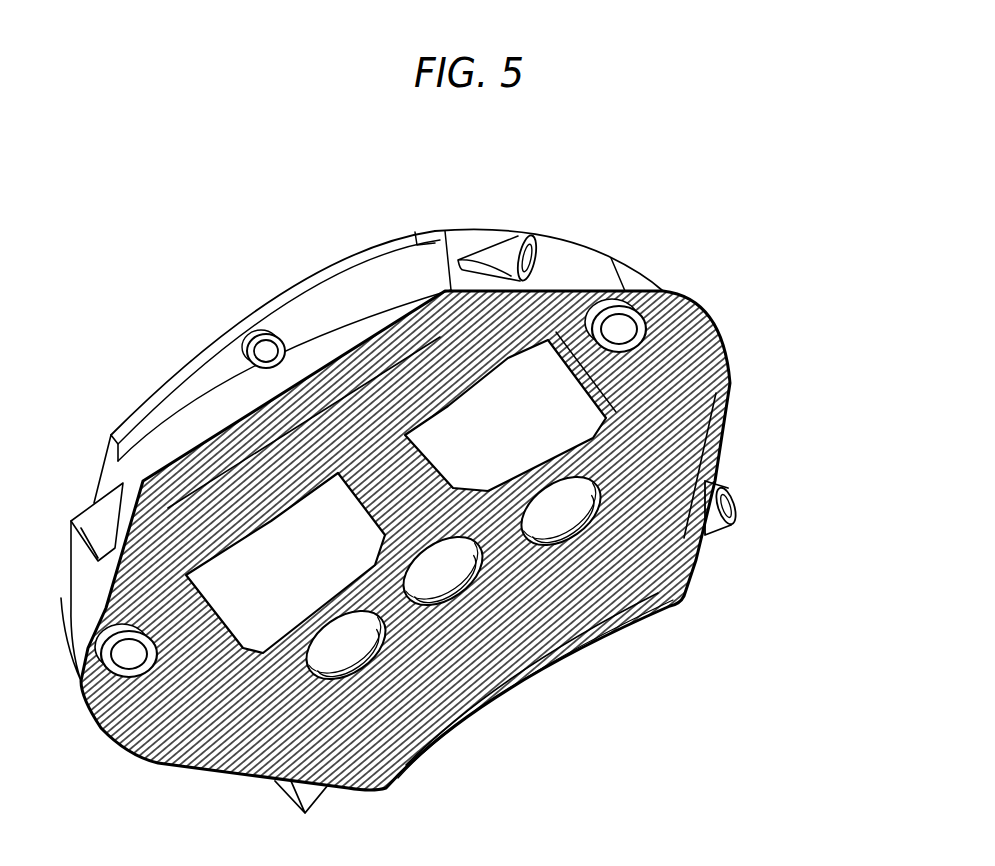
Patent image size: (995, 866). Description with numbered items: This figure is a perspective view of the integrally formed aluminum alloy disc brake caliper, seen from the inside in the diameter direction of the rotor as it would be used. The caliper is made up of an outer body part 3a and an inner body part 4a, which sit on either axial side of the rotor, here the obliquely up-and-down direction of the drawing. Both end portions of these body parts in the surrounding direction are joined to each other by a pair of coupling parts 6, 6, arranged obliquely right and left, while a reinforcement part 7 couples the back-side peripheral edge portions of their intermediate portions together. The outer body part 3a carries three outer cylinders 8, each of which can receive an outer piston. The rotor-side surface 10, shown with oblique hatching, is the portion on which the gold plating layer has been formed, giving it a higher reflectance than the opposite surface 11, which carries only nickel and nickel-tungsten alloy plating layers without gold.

The outer body part 3a is at (500, 682).
The inner body part 4a is at (177, 405).
The coupling part 6 is at (625, 272).
The reinforcement part 7 is at (433, 457).
The outer cylinder 8 is at (540, 540).
The rotor-side surface 10 is at (540, 600).
The opposite surface 11 is at (360, 279).